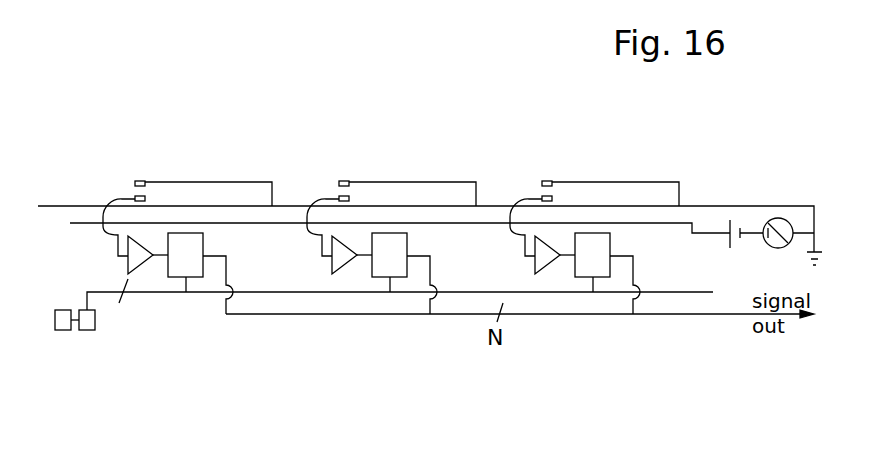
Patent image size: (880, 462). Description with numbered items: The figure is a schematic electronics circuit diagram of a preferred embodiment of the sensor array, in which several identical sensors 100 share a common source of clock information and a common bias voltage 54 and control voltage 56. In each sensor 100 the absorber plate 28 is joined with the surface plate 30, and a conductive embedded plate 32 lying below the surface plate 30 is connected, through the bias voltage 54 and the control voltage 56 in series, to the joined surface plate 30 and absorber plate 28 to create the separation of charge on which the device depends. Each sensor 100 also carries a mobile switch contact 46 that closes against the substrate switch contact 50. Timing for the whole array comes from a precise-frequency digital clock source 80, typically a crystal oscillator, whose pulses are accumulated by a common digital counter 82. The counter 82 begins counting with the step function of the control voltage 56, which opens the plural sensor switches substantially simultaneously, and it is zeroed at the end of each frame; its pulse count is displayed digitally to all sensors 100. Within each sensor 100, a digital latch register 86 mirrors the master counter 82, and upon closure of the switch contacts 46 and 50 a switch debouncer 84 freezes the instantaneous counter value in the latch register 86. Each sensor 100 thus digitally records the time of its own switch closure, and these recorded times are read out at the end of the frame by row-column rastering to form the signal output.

The sensor 100 is at (360, 246).
The absorber plate 28 is at (182, 182).
The surface plate 30 is at (190, 206).
The conductive embedded plate 32 is at (223, 222).
The mobile switch contact 46 is at (135, 183).
The substrate switch contact 50 is at (135, 197).
The bias voltage 54 is at (730, 248).
The control voltage 56 is at (770, 245).
The digital clock source 80 is at (62, 333).
The digital counter 82 is at (95, 330).
The switch debouncer 84 is at (137, 257).
The digital latch register 86 is at (187, 260).